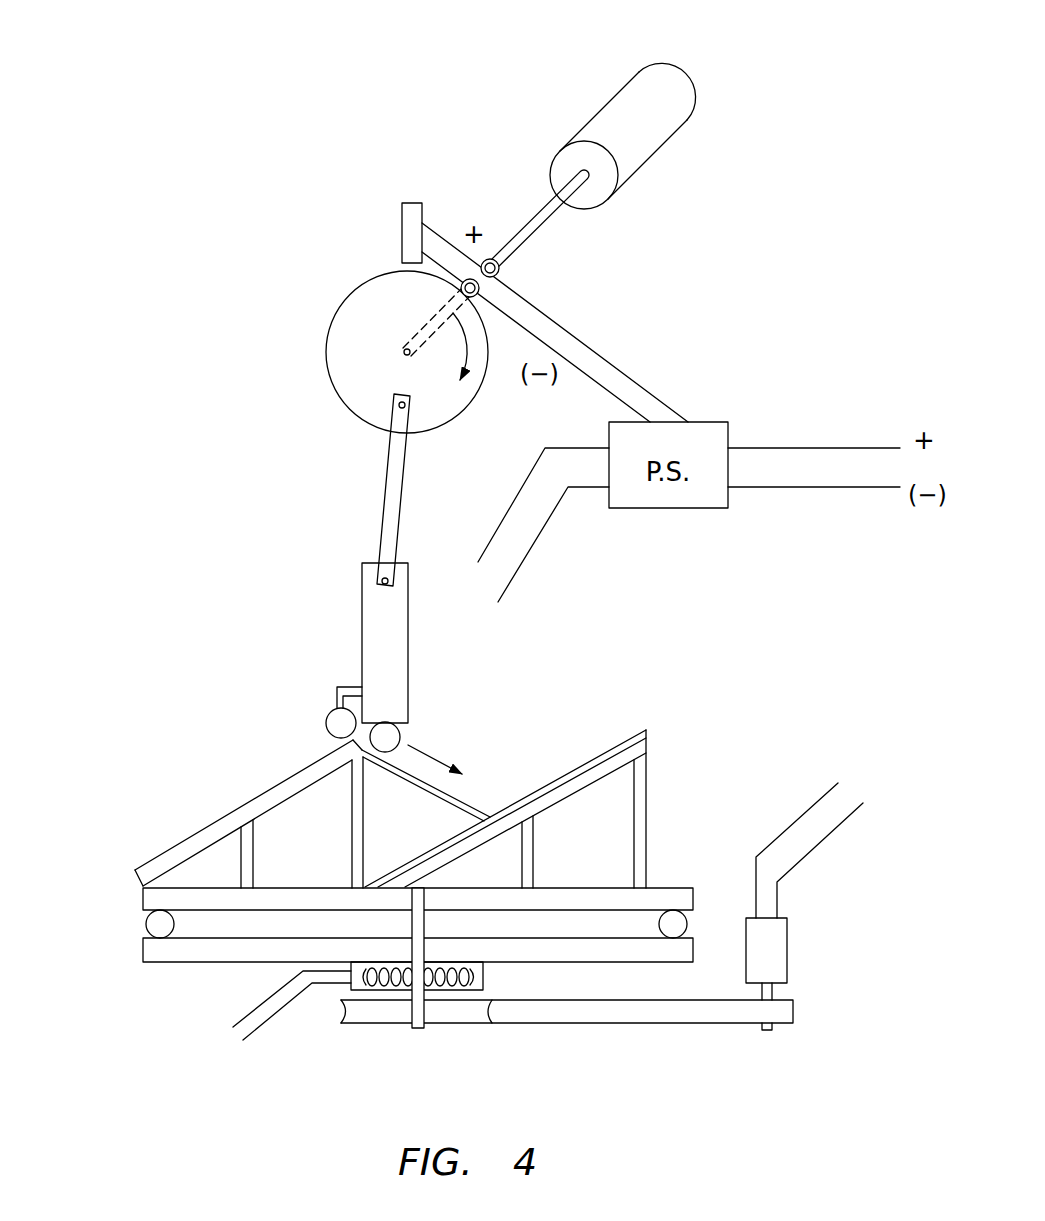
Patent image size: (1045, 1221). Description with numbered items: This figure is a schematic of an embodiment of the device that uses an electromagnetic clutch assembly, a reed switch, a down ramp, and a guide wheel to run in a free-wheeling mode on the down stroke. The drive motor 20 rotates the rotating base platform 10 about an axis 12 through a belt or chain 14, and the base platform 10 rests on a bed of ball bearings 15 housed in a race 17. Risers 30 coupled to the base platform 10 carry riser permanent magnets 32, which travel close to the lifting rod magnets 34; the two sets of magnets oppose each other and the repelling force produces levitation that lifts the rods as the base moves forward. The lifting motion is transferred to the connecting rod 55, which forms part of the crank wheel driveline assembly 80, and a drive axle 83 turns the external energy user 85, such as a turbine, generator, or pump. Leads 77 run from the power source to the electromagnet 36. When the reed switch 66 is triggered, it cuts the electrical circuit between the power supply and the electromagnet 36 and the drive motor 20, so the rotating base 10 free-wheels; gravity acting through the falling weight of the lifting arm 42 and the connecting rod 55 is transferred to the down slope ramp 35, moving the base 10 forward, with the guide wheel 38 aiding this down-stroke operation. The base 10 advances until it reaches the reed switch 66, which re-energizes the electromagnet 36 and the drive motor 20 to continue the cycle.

The rotating base platform 10 is at (668, 866).
The axis 12 is at (418, 1028).
The belt or chain 14 is at (533, 1025).
The ball bearings 15 is at (136, 925).
The race 17 is at (132, 960).
The drive motor 20 is at (805, 945).
The risers 30 is at (290, 798).
The riser permanent magnets 32 is at (146, 852).
The lifting rod magnets 34 is at (429, 724).
The down slope ramp 35 is at (467, 798).
The electromagnet 36 is at (509, 978).
The guide wheel 38 is at (316, 723).
The lifting arm 42 is at (349, 647).
The connecting rod 55 is at (361, 476).
The reed switch 66 is at (372, 220).
The leads 77 is at (527, 488).
The crank wheel 80 is at (314, 323).
The drive axle 83 is at (551, 260).
The external energy user 85 is at (588, 100).